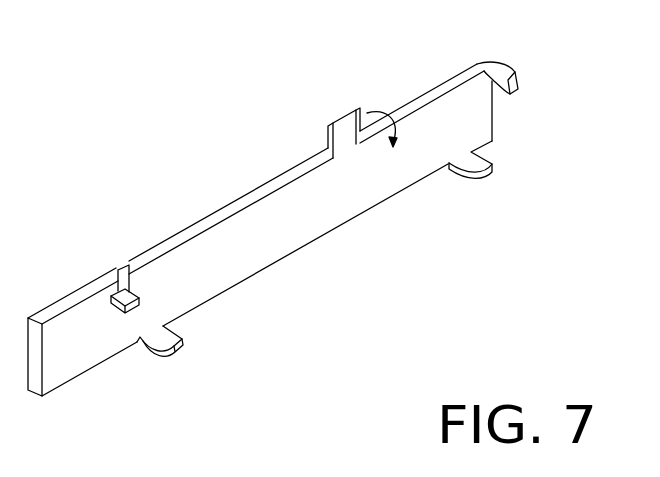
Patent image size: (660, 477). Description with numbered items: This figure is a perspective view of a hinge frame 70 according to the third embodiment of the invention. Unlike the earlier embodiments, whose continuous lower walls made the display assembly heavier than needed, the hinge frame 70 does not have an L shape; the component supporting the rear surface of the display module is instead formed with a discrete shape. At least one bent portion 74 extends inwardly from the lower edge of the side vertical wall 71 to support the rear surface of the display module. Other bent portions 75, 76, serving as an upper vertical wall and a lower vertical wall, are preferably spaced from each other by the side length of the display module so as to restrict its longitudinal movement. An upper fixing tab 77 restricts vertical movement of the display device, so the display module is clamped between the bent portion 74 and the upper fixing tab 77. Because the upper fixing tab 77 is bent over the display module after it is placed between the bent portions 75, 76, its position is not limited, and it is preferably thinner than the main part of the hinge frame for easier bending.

The hinge frame 70 is at (303, 219).
The side vertical wall 71 is at (292, 237).
The bent portion 74 is at (170, 333).
The bent portion 75 is at (510, 66).
The bent portion 76 is at (125, 297).
The upper fixing tab 77 is at (350, 119).